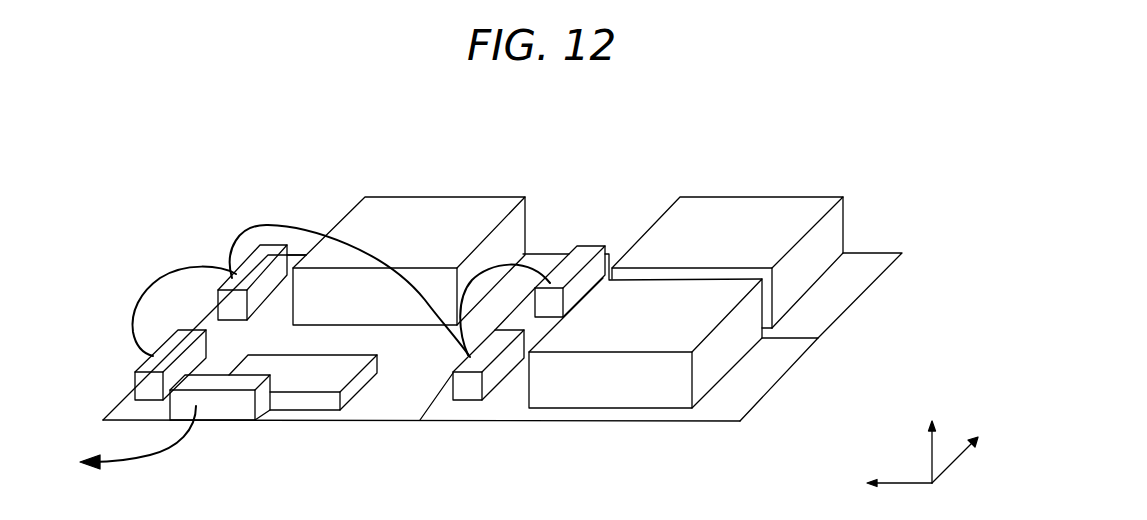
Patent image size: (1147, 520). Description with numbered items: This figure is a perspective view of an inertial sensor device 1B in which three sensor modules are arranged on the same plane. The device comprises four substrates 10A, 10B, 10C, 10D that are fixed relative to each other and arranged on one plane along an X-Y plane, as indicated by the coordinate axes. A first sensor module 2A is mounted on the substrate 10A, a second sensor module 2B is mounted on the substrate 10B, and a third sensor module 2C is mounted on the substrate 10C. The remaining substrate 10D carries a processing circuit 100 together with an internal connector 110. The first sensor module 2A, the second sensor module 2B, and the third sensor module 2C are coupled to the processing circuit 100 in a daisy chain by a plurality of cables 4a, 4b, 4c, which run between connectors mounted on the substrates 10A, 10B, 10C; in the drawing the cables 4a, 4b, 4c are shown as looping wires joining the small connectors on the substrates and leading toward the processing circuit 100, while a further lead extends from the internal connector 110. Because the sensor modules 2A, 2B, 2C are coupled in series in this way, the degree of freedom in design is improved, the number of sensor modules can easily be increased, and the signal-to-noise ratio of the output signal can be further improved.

The inertial sensor device 1B is at (840, 147).
The first sensor module 2A is at (725, 355).
The second sensor module 2B is at (824, 234).
The third sensor module 2C is at (387, 208).
The cable 4a is at (480, 262).
The cable 4b is at (265, 226).
The cable 4c is at (158, 273).
The substrate 10A is at (753, 383).
The substrate 10B is at (852, 280).
The substrate 10C is at (547, 260).
The substrate 10D is at (398, 410).
The processing circuit 100 is at (315, 400).
The internal connector 110 is at (227, 408).